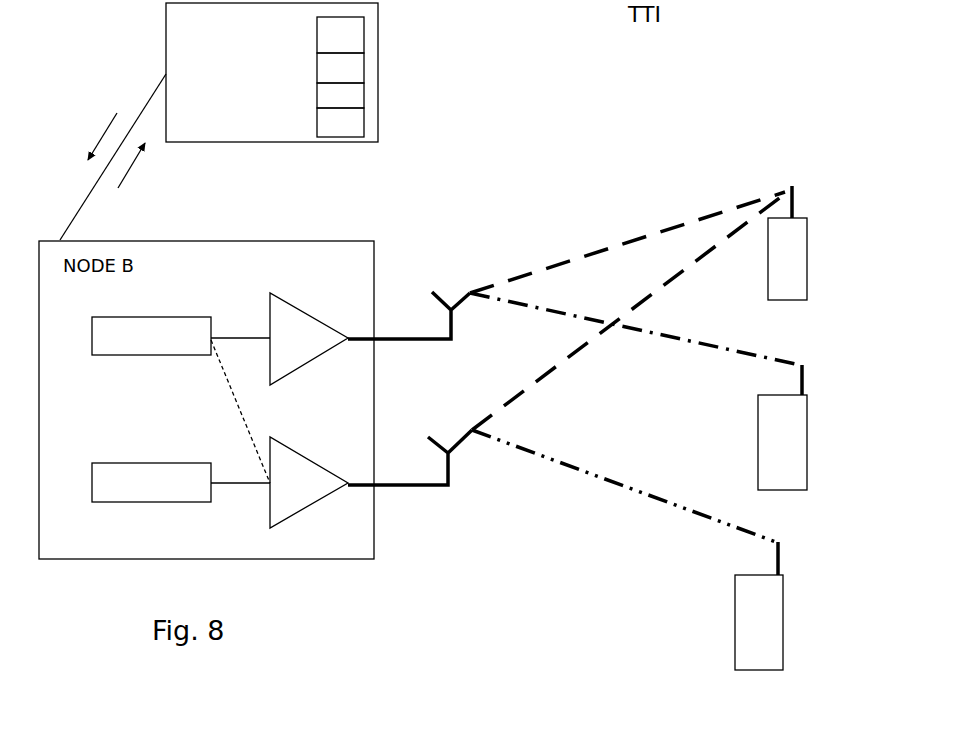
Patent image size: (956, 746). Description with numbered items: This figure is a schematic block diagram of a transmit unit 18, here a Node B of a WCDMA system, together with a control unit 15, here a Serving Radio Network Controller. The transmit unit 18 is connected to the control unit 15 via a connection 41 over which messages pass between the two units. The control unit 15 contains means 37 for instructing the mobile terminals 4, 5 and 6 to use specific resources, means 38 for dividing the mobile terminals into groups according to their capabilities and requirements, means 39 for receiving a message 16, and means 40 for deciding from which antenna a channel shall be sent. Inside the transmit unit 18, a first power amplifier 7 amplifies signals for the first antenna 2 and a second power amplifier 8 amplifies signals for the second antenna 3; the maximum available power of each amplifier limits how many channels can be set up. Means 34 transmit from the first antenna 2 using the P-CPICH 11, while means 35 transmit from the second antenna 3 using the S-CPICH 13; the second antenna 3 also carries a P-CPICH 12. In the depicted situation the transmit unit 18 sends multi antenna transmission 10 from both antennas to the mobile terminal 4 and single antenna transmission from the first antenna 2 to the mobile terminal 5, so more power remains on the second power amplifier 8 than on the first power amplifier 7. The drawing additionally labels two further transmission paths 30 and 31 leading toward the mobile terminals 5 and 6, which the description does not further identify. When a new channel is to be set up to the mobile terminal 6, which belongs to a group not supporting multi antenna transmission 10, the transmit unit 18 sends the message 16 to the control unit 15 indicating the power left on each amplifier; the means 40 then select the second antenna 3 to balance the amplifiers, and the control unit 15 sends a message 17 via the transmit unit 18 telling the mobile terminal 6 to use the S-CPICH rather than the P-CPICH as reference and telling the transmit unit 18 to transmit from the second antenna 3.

The first antenna 2 is at (417, 342).
The second antenna 3 is at (450, 487).
The mobile terminal 4 is at (807, 257).
The mobile terminal 5 is at (807, 440).
The mobile terminal 6 is at (783, 620).
The first power amplifier 7 is at (322, 318).
The second power amplifier 8 is at (303, 455).
The multi antenna transmission 10 is at (633, 307).
The P-CPICH 11 is at (393, 322).
The P-CPICH 12 is at (378, 458).
The S-CPICH 13 is at (393, 522).
The control unit 15 is at (221, 37).
The message 16 is at (135, 162).
The message 17 is at (106, 135).
The transmit unit 18 is at (68, 240).
The signal path to user equipment 30 is at (677, 337).
The signal path to user equipment 31 is at (613, 487).
The means for single antenna transmission from first antenna 34 is at (142, 346).
The means for transmission from second antenna 35 is at (142, 493).
The means for instructing mobile terminals 37 is at (350, 45).
The means for dividing mobile terminals into groups 38 is at (350, 78).
The means for receiving message 39 is at (350, 105).
The means for deciding antenna 40 is at (350, 131).
The connection 41 is at (138, 110).